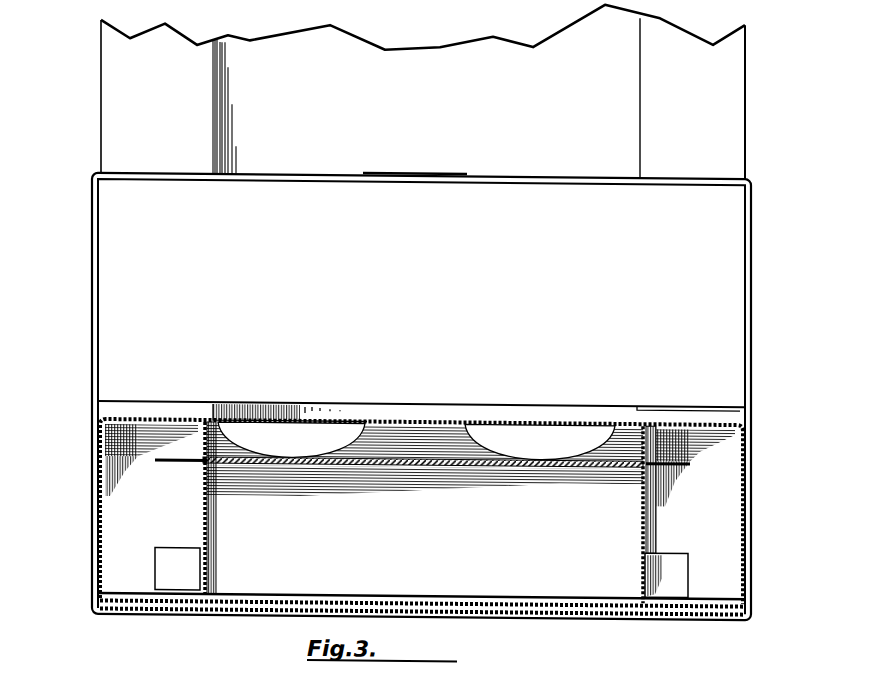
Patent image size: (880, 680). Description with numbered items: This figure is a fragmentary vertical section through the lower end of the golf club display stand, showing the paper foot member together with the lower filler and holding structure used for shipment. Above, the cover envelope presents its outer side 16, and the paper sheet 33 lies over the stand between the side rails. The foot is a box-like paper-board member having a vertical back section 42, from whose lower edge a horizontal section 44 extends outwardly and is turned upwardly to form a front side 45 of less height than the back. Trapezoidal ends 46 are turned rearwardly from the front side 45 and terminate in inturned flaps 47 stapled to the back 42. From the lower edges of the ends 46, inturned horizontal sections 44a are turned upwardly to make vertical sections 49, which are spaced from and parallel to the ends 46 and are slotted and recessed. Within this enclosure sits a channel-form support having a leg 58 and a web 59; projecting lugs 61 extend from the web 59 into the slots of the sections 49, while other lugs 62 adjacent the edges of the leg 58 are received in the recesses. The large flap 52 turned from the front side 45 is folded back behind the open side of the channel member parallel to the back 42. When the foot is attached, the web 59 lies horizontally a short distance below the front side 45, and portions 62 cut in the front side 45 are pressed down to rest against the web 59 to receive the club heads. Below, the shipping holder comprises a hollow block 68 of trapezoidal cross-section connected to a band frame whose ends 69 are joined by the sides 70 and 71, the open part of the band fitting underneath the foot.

The outer side 16 is at (118, 106).
The paper sheet 33 is at (455, 58).
The vertical back section 42 is at (290, 609).
The horizontal section 44 is at (483, 662).
The inturned horizontal sections 44a is at (166, 660).
The front side 45 is at (427, 412).
The ends 46 is at (97, 506).
The inturned flaps 47 is at (137, 598).
The vertical sections 49 is at (205, 528).
The flap 52 is at (340, 594).
The leg 58 is at (487, 565).
The web 59 is at (395, 457).
The projecting lugs 61 is at (170, 460).
The projecting lugs 62 is at (168, 551).
The hollow block 68 is at (723, 259).
The ends 69 is at (98, 333).
The side 70 is at (525, 607).
The side 71 is at (490, 178).